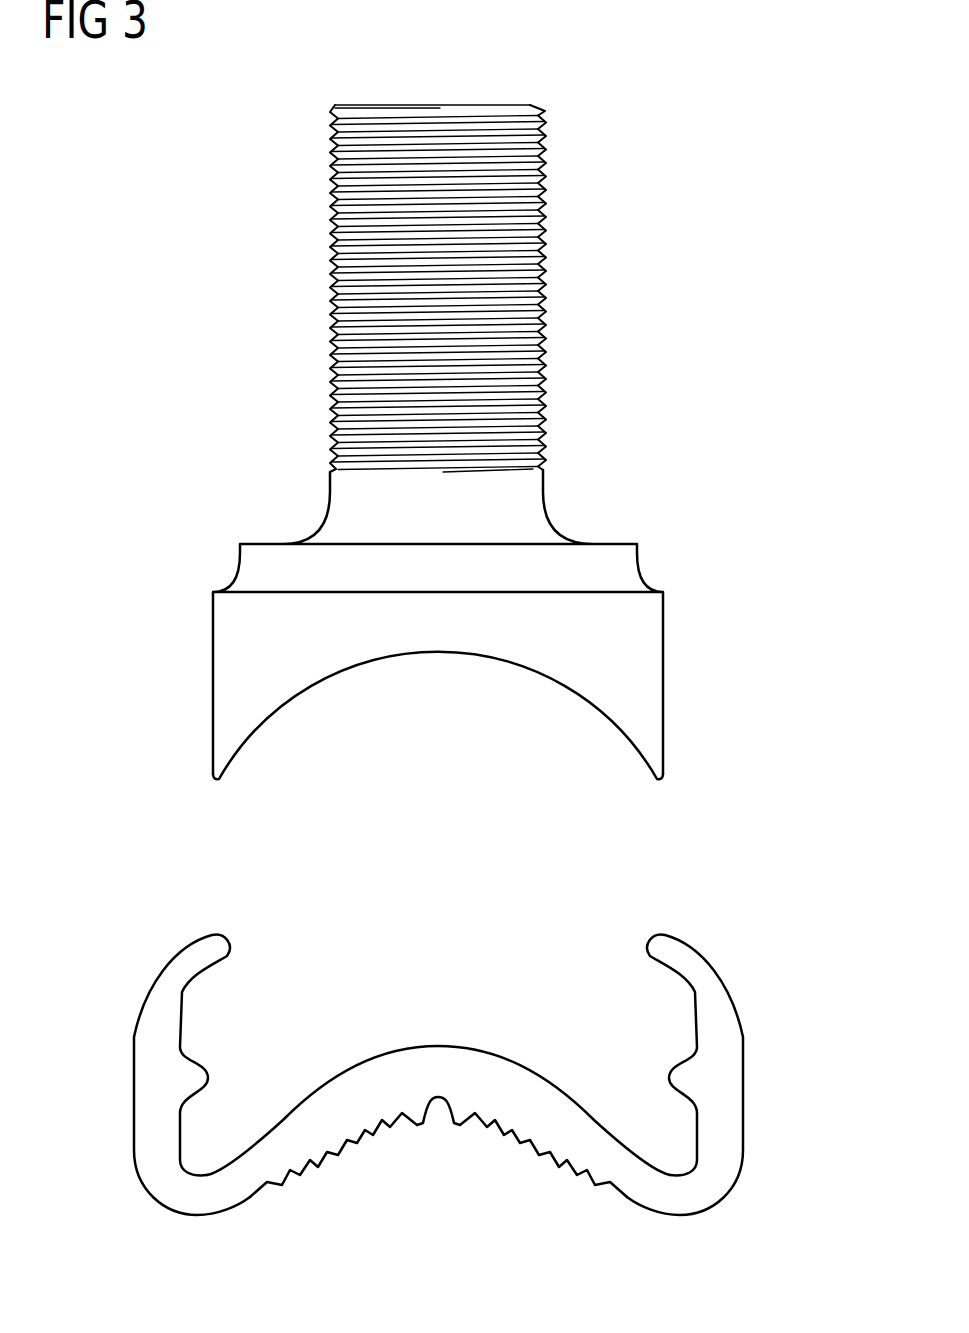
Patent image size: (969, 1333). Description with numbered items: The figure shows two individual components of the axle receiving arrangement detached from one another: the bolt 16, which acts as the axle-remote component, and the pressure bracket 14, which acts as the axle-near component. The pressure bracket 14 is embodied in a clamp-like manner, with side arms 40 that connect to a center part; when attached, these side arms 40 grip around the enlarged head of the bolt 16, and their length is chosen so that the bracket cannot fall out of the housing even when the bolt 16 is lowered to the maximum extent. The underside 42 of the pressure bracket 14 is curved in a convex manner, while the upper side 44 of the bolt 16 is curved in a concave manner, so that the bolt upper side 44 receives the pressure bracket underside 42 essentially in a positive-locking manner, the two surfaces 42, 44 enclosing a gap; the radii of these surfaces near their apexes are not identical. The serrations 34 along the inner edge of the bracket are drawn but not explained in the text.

The bolt 16 is at (472, 442).
The bolt upper side 44 is at (497, 658).
The pressure bracket 14 is at (450, 1052).
The side arms 40 is at (133, 1072).
The pressure bracket underside 42 is at (410, 1048).
The serrated teeth 34 is at (328, 1153).